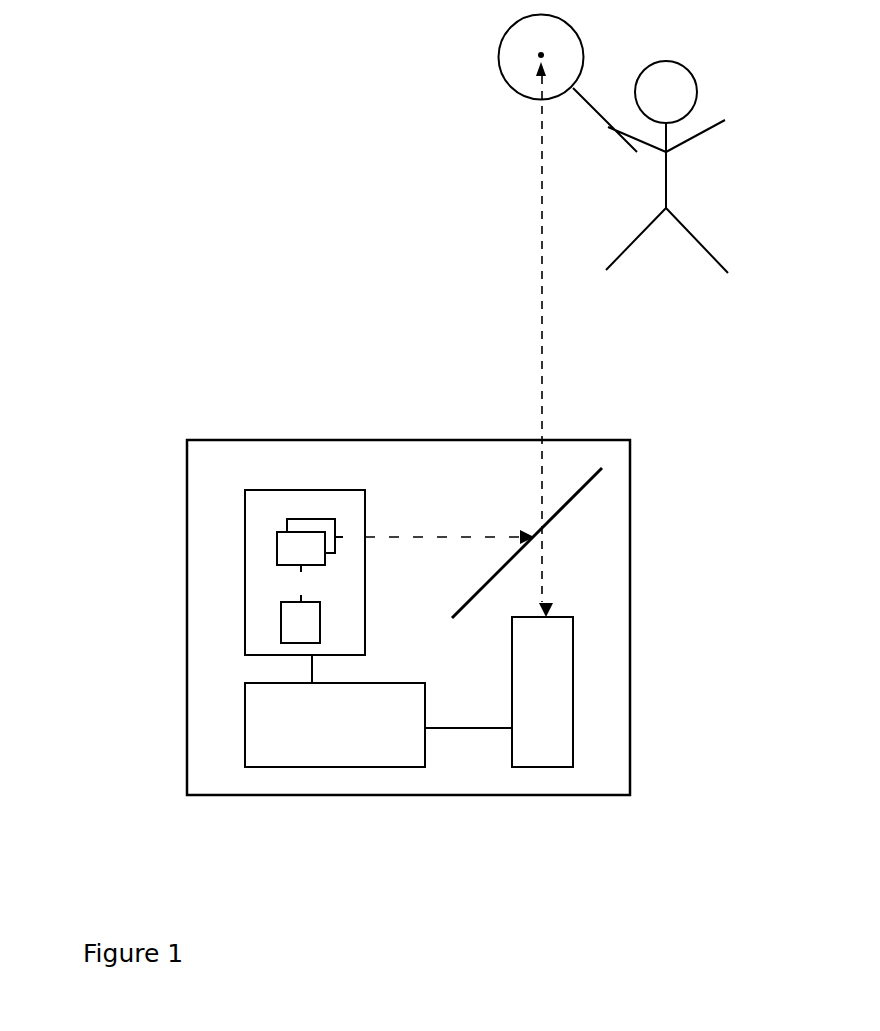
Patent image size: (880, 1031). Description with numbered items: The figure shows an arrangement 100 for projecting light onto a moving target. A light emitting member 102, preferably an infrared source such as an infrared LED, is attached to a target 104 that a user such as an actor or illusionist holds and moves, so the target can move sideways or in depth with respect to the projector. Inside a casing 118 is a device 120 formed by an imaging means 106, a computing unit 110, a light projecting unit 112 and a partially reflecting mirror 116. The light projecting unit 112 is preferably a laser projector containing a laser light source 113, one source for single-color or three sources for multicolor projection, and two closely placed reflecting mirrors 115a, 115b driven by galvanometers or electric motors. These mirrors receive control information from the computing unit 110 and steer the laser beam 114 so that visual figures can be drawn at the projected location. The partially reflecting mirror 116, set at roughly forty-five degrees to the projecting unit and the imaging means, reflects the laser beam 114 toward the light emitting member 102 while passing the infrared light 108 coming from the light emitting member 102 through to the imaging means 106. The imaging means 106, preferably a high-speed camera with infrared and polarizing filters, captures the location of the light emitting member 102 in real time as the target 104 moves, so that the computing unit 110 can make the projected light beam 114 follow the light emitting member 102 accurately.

The arrangement 100 is at (100, 56).
The light emitting member 102 is at (536, 58).
The target 104 is at (513, 45).
The imaging means 106 is at (573, 690).
The infrared light 108 is at (547, 400).
The computing unit 110 is at (328, 768).
The light projecting unit 112 is at (243, 578).
The laser light source 113 is at (280, 620).
The laser beam 114 is at (535, 303).
The reflecting mirror 115a is at (276, 545).
The reflecting mirror 115b is at (310, 519).
The partially reflecting mirror 116 is at (572, 502).
The casing 118 is at (250, 440).
The device 120 is at (436, 633).